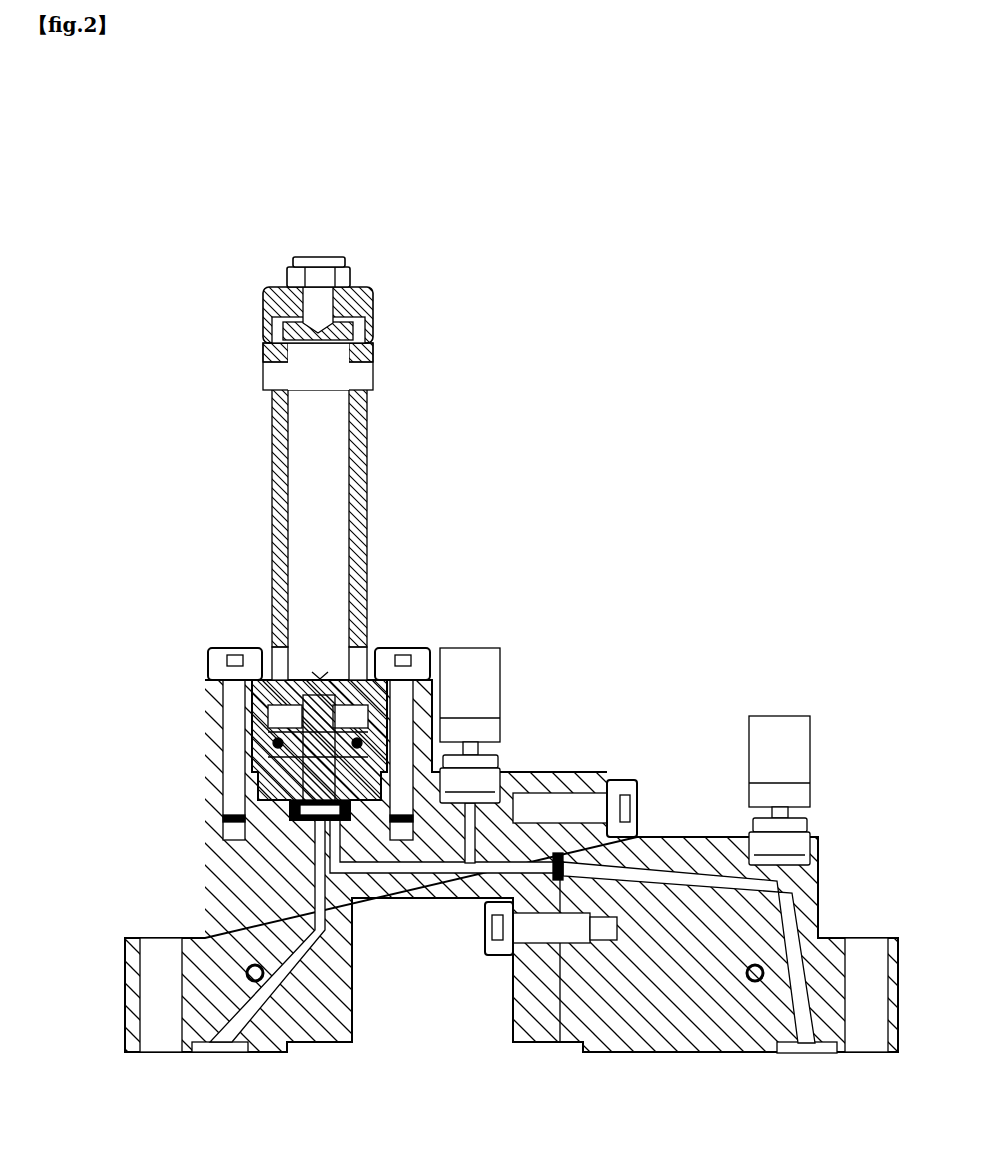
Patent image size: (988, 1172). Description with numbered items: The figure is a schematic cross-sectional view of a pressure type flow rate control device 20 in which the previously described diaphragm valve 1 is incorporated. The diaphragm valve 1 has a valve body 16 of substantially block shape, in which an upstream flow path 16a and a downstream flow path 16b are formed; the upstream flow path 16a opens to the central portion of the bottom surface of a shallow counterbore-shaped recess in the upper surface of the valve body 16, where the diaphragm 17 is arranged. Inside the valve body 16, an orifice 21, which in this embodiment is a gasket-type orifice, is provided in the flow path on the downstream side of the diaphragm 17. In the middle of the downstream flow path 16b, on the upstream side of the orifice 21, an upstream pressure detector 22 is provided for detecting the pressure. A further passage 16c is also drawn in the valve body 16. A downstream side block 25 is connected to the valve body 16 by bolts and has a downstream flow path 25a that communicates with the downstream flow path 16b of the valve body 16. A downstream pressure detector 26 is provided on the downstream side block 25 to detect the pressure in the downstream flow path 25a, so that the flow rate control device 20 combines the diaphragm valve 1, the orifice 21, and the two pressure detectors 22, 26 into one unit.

The diaphragm valve 1 is at (256, 497).
The valve body 16 is at (330, 977).
The upstream flow path 16a is at (267, 997).
The downstream flow path 16b is at (417, 865).
The passage 16c is at (510, 803).
The diaphragm 17 is at (305, 825).
The pressure type flow rate control device 20 is at (509, 701).
The orifice 21 is at (512, 957).
The upstream pressure detector 22 is at (477, 658).
The downstream side block 25 is at (735, 1030).
The downstream flow path 25a is at (787, 907).
The downstream pressure detector 26 is at (785, 730).